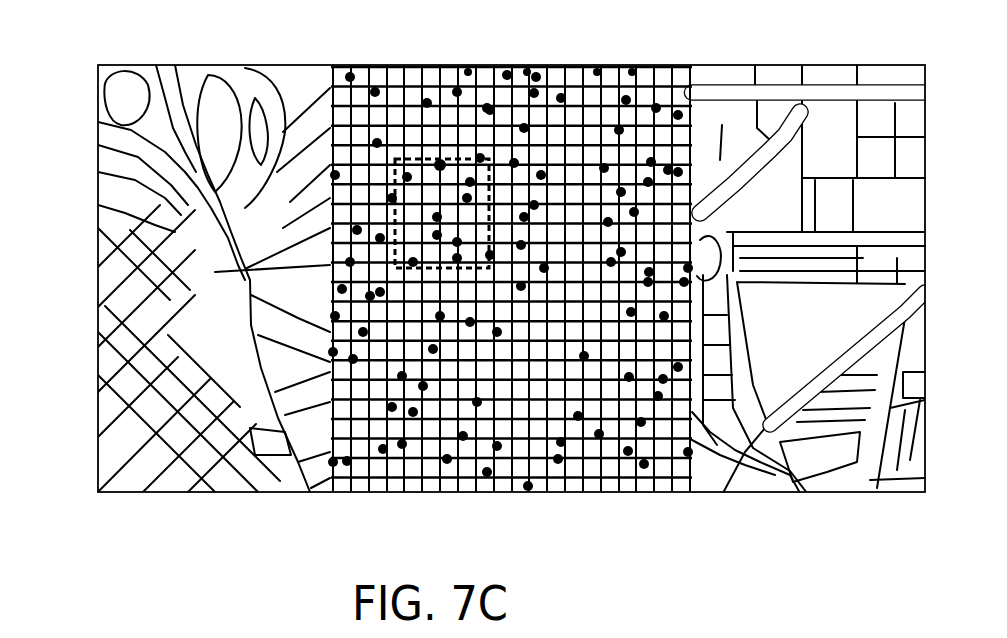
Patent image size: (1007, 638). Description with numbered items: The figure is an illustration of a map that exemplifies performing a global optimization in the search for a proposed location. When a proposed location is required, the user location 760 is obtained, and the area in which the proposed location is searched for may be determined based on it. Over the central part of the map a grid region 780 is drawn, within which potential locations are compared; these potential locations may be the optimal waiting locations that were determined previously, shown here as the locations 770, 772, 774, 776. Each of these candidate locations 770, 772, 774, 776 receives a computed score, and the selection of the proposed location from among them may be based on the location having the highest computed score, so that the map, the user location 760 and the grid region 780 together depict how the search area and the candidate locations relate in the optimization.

The user location 760 is at (300, 63).
The grid overlay region of interest 780 is at (386, 63).
The location 770 is at (468, 63).
The location 772 is at (527, 63).
The location 774 is at (597, 63).
The location 776 is at (632, 63).